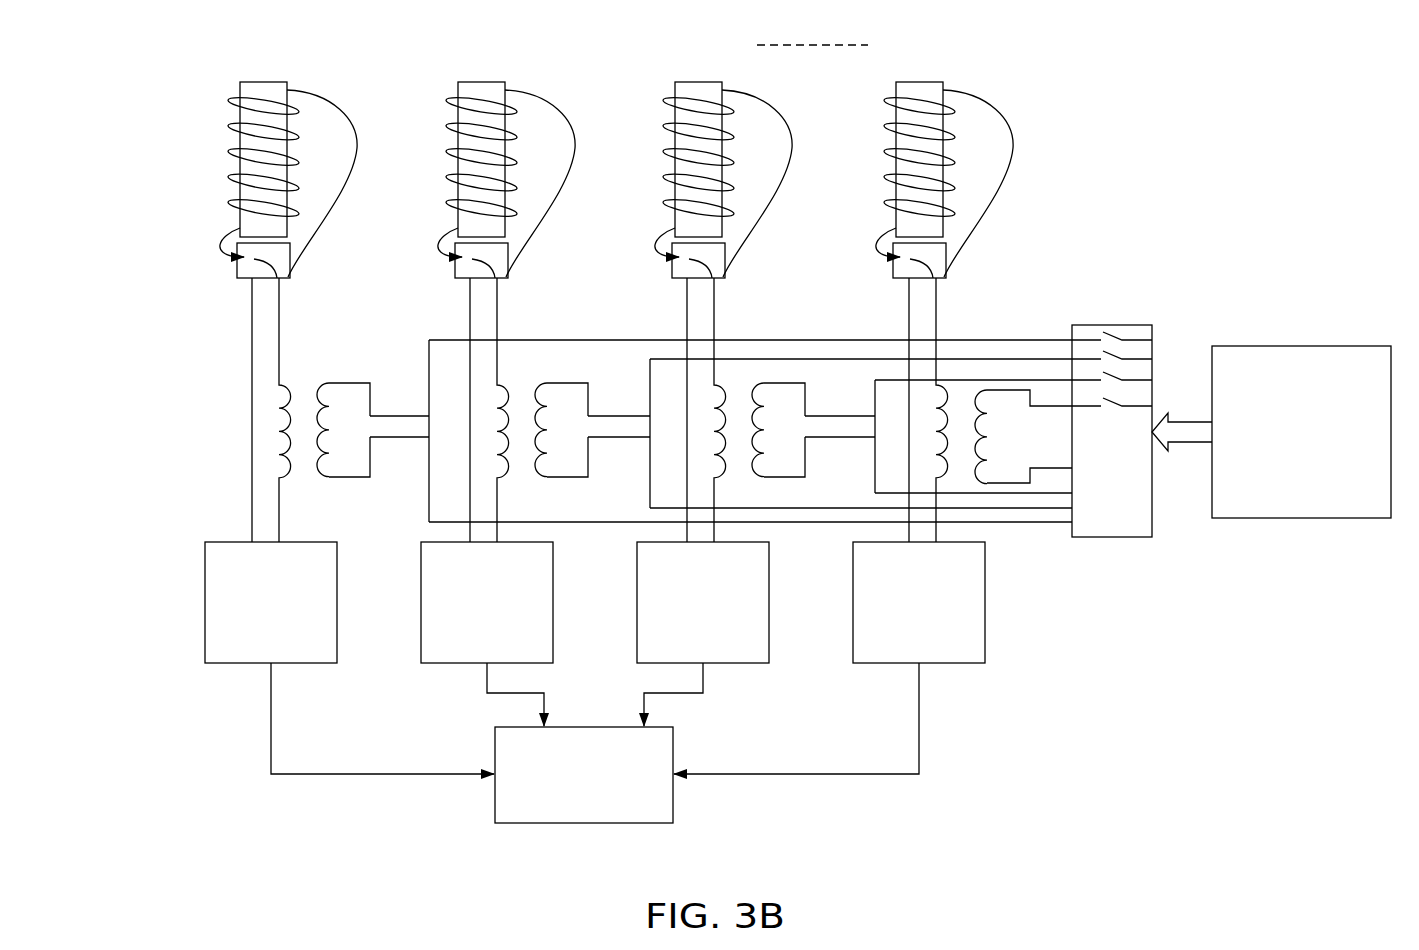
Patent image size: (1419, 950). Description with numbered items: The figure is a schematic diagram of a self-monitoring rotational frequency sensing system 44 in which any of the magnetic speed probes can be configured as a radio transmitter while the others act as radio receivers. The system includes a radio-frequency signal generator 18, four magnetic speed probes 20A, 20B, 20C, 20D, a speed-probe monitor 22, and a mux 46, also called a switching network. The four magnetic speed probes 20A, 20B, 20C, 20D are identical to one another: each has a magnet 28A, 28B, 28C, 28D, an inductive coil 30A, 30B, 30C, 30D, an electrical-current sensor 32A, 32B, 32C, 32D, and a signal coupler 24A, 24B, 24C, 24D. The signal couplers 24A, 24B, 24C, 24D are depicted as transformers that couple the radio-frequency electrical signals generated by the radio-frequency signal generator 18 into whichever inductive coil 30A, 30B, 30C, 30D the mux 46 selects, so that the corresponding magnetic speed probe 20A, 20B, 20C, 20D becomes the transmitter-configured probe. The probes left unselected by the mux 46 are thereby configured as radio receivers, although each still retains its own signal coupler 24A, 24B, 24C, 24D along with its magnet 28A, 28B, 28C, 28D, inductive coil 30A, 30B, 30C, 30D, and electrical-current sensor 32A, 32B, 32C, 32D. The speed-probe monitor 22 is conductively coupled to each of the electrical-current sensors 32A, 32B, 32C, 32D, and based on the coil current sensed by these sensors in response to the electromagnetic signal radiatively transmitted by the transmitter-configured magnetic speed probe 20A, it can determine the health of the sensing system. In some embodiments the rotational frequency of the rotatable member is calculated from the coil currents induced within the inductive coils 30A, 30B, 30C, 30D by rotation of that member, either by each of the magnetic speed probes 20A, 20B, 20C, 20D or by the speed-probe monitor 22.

The radio-frequency signal generator 18 is at (1300, 518).
The magnetic speed probe 20A is at (929, 312).
The magnetic speed probe 20B is at (708, 312).
The magnetic speed probe 20C is at (493, 312).
The magnetic speed probe 20D is at (224, 312).
The speed-probe monitor 22 is at (673, 793).
The signal coupler 24A is at (972, 482).
The signal coupler 24B is at (750, 482).
The signal coupler 24C is at (537, 482).
The signal coupler 24D is at (324, 492).
The magnet 28A is at (892, 265).
The magnet 28B is at (672, 265).
The magnet 28C is at (455, 265).
The magnet 28D is at (237, 268).
The inductive coil 30A is at (890, 128).
The inductive coil 30B is at (668, 128).
The inductive coil 30C is at (450, 128).
The inductive coil 30D is at (232, 128).
The electrical-current sensor 32A is at (985, 603).
The electrical-current sensor 32B is at (769, 603).
The electrical-current sensor 32C is at (421, 603).
The electrical-current sensor 32D is at (205, 603).
The self-monitoring rotational frequency sensing system 44 is at (718, 432).
The mux 46 is at (1151, 326).